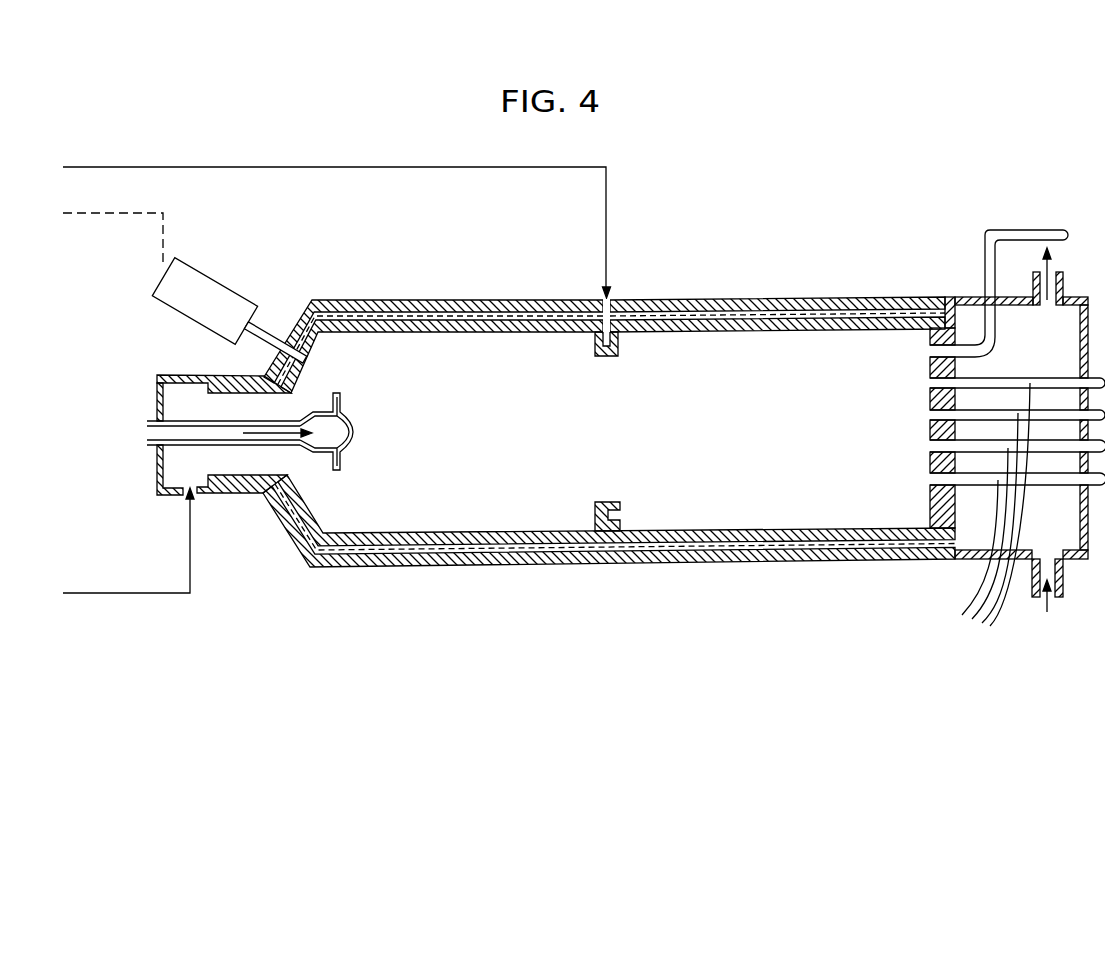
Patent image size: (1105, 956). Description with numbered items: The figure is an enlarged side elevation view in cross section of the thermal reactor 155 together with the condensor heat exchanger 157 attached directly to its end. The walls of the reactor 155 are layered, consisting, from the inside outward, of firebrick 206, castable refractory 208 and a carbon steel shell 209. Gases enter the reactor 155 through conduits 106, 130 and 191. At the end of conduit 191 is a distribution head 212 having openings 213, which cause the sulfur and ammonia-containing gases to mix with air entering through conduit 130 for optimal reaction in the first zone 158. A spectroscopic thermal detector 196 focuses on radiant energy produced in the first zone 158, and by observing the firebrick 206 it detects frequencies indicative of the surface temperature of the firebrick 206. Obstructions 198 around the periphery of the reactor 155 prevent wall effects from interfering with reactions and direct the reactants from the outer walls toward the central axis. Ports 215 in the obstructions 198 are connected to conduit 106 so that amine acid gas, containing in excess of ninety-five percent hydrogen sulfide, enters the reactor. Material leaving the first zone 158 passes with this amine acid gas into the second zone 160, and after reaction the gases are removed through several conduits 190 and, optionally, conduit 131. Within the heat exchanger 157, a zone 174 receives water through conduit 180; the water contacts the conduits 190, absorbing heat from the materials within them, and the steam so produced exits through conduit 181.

The conduit 106 is at (607, 190).
The conduit 130 is at (133, 593).
The conduit 131 is at (983, 255).
The thermal reactor 155 is at (575, 430).
The condensor heat exchanger 157 is at (1026, 570).
The first zone 158 is at (468, 486).
The second zone 160 is at (769, 489).
The zone 174 is at (1072, 525).
The conduit 180 is at (1065, 580).
The conduit 181 is at (1063, 280).
The conduits 190 is at (986, 512).
The conduit 191 is at (200, 422).
The spectroscopic thermal detector 196 is at (197, 277).
The obstructions 198 is at (588, 338).
The firebrick 206 is at (413, 323).
The castable refractory 208 is at (470, 313).
The carbon steel shell 209 is at (518, 302).
The distribution head 212 is at (353, 458).
The openings 213 is at (337, 394).
The ports 215 is at (623, 510).